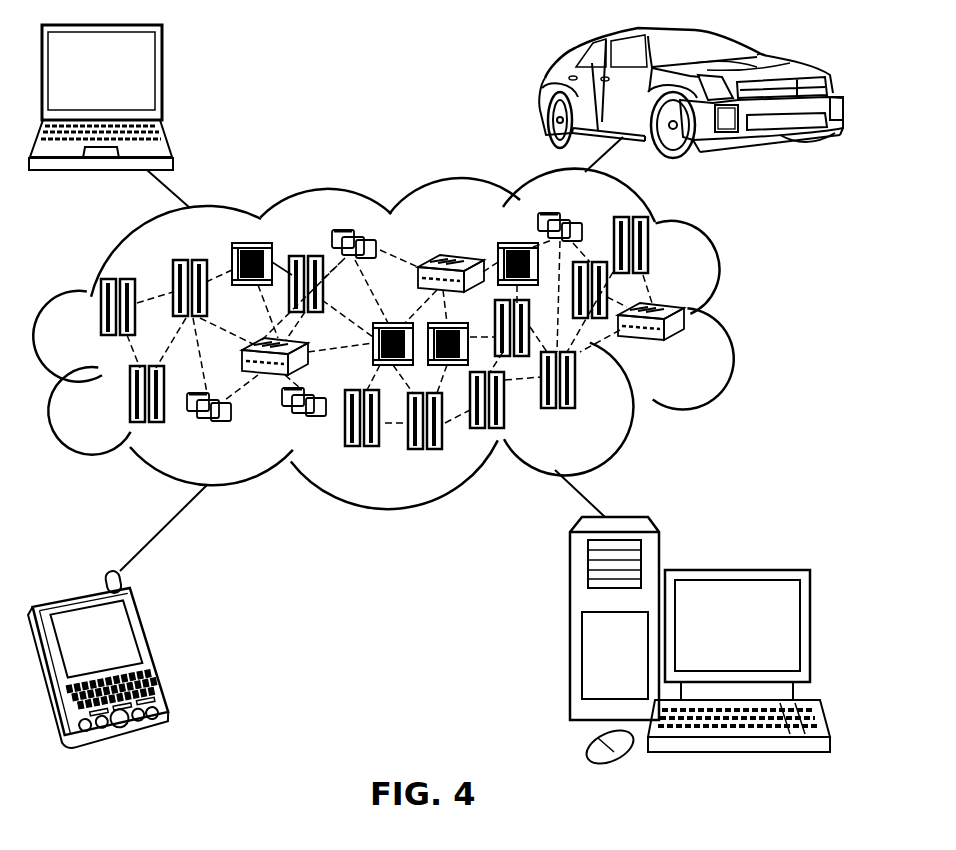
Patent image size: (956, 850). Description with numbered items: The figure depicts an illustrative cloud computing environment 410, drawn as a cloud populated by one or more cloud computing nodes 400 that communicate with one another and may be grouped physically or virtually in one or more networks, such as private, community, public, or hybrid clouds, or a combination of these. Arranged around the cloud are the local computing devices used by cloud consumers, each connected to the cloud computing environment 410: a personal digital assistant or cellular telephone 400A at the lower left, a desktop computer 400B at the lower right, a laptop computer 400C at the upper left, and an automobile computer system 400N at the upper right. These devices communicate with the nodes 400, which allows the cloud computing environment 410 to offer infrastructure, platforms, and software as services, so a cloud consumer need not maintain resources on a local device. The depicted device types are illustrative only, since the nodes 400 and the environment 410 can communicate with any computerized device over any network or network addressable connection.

The cloud computing nodes 400 is at (433, 397).
The cloud computing environment 410 is at (734, 316).
The personal digital assistant (PDA) or cellular telephone 400A is at (153, 652).
The desktop computer 400B is at (735, 570).
The laptop computer 400C is at (163, 79).
The automobile computer system 400N is at (545, 91).